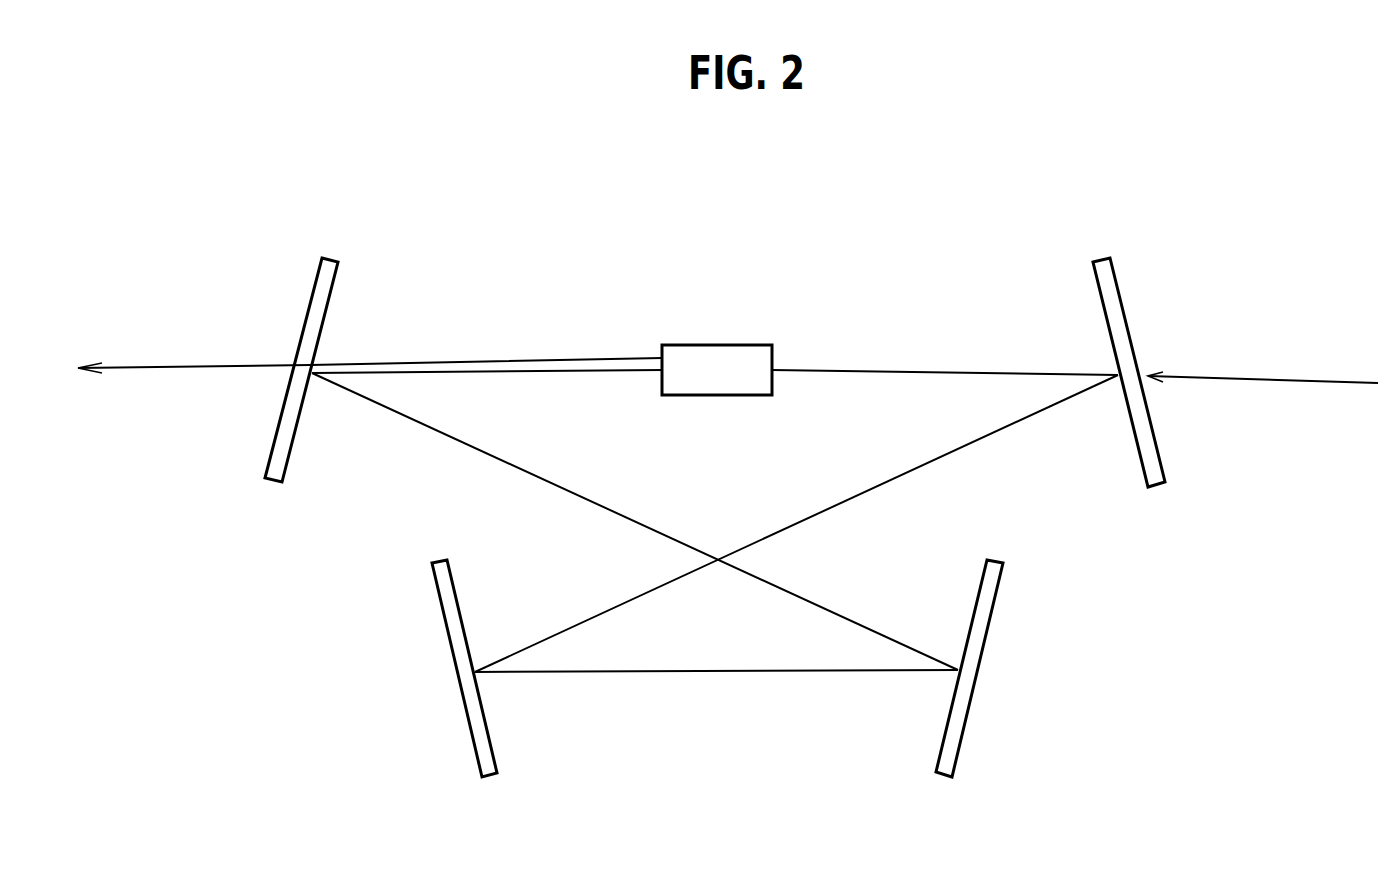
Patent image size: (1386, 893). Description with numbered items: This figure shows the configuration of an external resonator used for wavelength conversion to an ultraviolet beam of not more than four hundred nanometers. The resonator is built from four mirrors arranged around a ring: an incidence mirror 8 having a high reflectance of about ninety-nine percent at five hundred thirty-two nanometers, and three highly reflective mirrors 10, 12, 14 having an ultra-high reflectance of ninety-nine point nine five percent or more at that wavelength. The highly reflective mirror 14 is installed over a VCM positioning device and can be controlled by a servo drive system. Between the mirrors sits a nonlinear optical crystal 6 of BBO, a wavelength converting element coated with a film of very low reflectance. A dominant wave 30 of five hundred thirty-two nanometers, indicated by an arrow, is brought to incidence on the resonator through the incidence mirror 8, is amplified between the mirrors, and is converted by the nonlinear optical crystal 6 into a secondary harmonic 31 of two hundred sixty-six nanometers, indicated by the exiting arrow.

The nonlinear optical crystal 6 is at (741, 345).
The incidence mirror 8 is at (1096, 282).
The highly reflective mirror 10 is at (333, 283).
The highly reflective mirror 12 is at (470, 748).
The highly reflective mirror 14 is at (965, 740).
The dominant wave 30 is at (1327, 382).
The secondary harmonic 31 is at (200, 363).